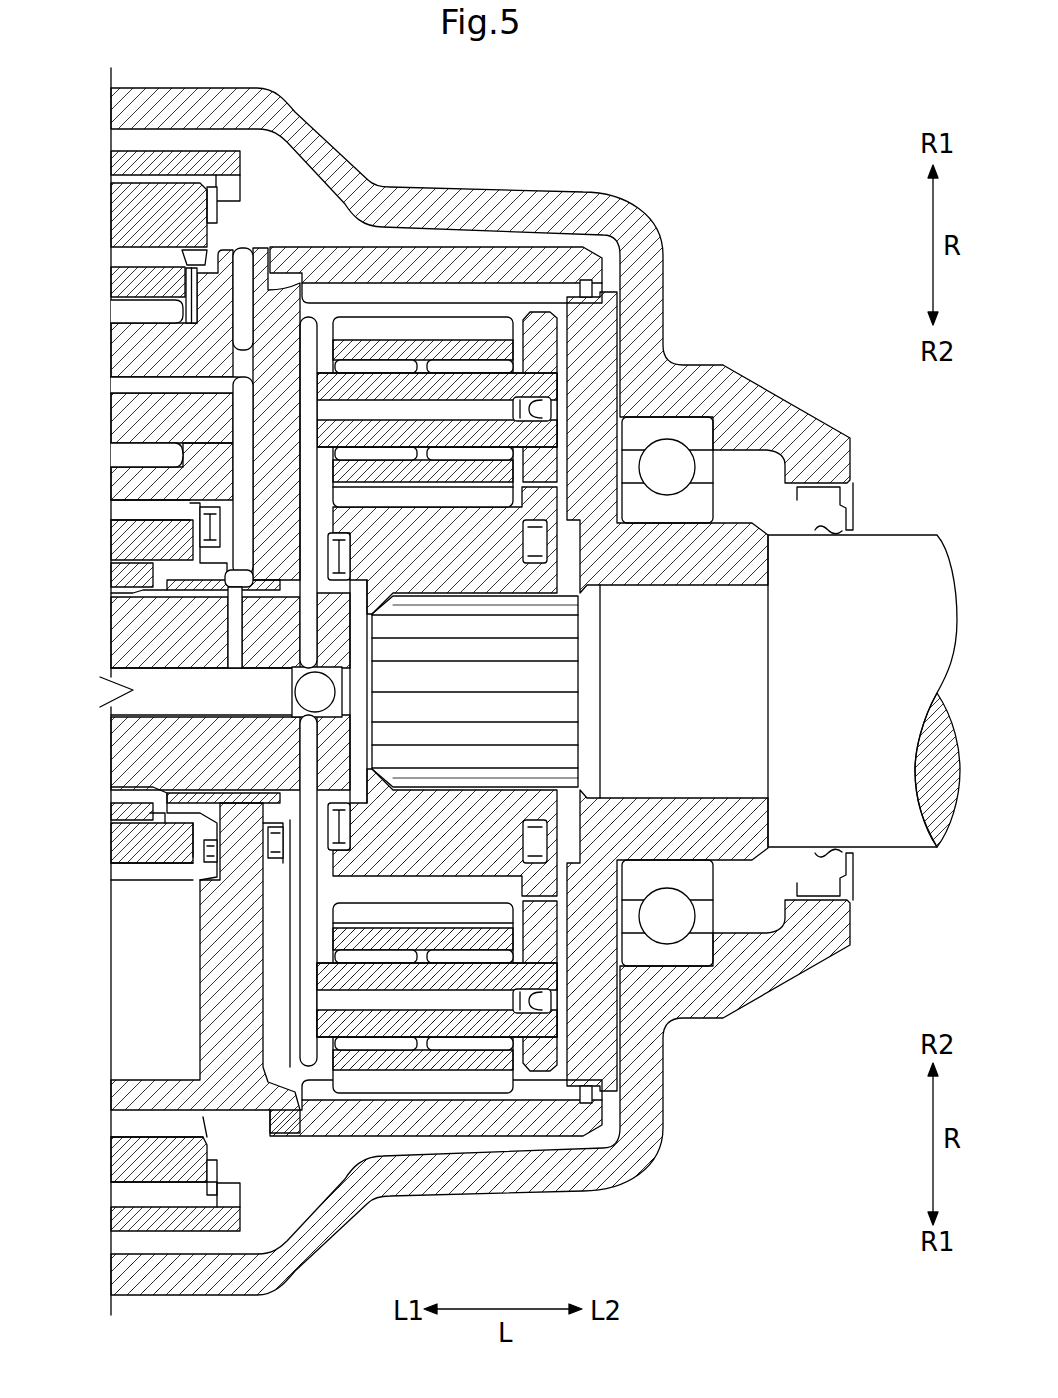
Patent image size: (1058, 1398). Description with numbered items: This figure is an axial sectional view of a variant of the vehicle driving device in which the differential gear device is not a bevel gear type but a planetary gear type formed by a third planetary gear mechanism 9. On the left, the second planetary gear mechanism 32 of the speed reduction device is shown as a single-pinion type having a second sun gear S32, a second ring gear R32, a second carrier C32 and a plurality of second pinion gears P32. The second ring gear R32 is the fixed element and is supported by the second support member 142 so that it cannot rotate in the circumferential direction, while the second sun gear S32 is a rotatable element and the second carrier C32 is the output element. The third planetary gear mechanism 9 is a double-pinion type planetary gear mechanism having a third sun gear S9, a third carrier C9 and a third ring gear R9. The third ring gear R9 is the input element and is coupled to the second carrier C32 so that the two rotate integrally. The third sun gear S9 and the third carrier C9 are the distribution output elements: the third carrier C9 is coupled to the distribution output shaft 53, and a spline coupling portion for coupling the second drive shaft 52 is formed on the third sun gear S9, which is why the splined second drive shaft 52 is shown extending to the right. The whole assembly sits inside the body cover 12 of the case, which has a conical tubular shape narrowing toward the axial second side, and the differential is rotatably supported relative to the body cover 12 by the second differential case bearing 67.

The second planetary gear mechanism 32 is at (170, 340).
The second support member 142 is at (133, 150).
The second ring gear R32 is at (120, 222).
The second pinion gears P32 is at (113, 280).
The second sun gear S32 is at (118, 542).
The distribution output shaft 53 is at (110, 748).
The second carrier C32 is at (205, 950).
The third planetary gear mechanism 9 is at (519, 619).
The third ring gear R9 is at (517, 257).
The third carrier C9 is at (553, 346).
The third sun gear S9 is at (497, 568).
The second drive shaft 52 is at (883, 830).
The second differential case bearing 67 is at (685, 957).
The body cover 12 is at (538, 1187).